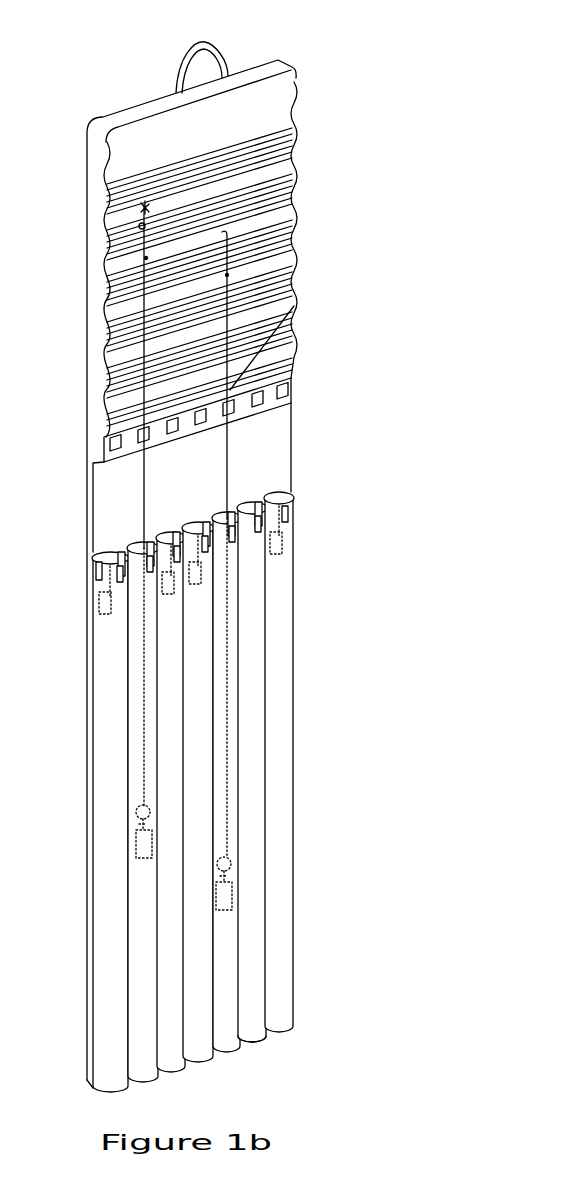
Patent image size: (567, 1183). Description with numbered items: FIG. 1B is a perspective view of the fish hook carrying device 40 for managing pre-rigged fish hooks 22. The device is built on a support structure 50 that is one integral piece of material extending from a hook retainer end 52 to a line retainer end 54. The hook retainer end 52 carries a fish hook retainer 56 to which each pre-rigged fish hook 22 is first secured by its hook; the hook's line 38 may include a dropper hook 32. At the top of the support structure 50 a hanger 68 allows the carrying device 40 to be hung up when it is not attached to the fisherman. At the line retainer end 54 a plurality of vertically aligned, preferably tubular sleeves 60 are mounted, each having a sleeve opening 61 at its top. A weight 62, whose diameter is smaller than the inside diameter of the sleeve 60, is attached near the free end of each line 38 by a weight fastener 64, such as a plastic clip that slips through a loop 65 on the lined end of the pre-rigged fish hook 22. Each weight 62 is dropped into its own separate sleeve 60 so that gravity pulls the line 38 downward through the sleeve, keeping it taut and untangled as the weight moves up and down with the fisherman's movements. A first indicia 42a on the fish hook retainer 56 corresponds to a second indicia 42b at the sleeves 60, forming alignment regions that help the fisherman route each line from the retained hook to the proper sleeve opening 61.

The fish hook carrying device 40 is at (204, 551).
The hook retainer end 52 is at (124, 110).
The fish hook retainer 56 is at (128, 168).
The hanger 68 is at (182, 53).
The pre-rigged fish hook 22 is at (112, 265).
The dropper hook 32 is at (294, 306).
The first indicia 42a is at (260, 404).
The second indicia 42b is at (268, 494).
The support structure 50 is at (90, 496).
The line 38 is at (141, 500).
The sleeve opening 61 is at (294, 504).
The sleeves 60 is at (173, 997).
The line retainer end 54 is at (252, 1043).
The loop 65 is at (137, 803).
The weight fastener 64 is at (103, 563).
The weight 62 is at (98, 612).